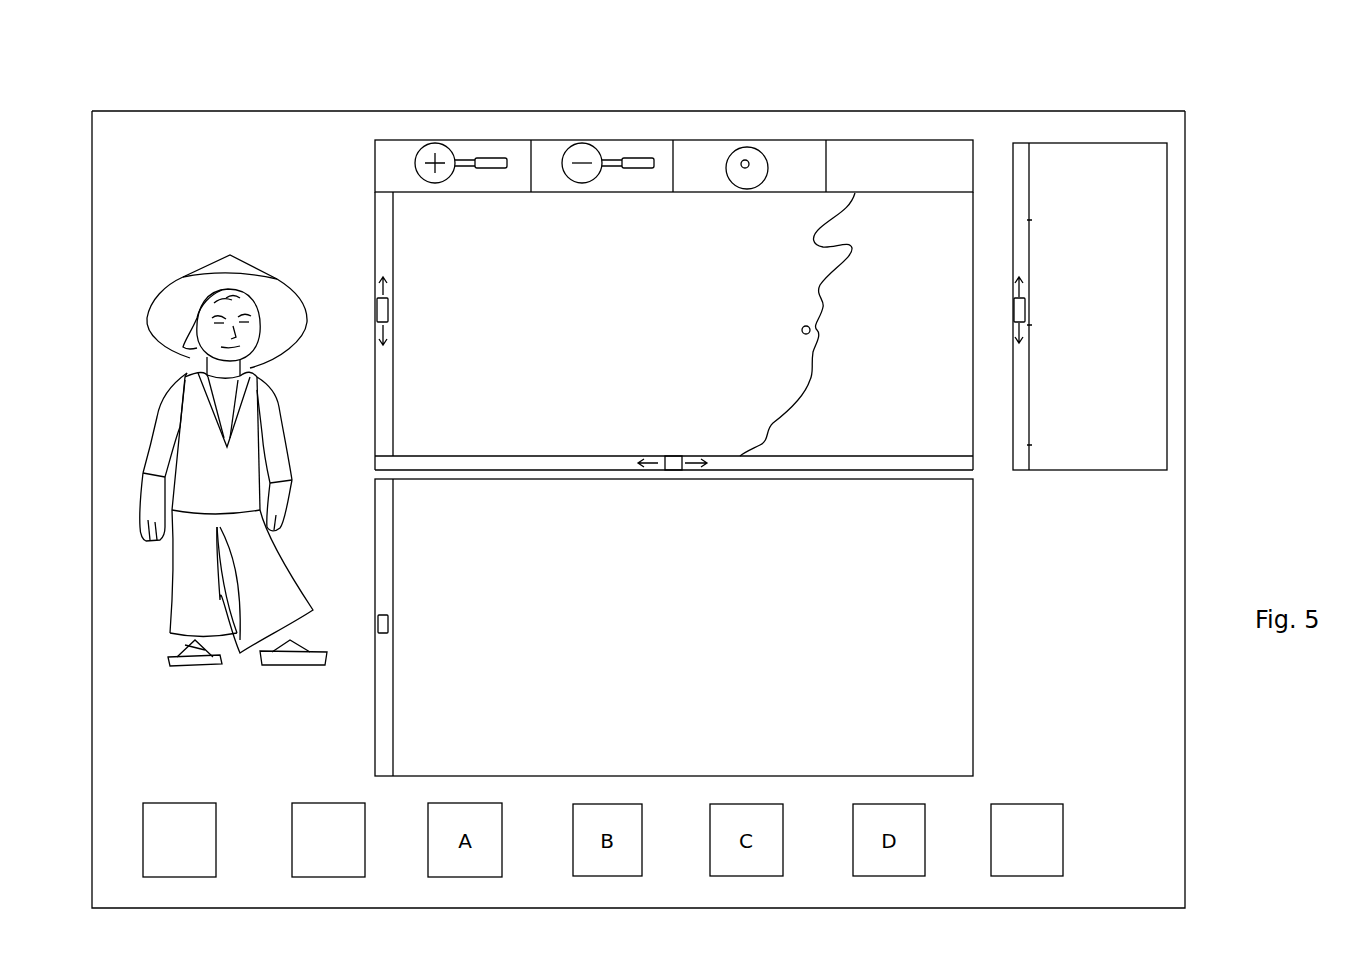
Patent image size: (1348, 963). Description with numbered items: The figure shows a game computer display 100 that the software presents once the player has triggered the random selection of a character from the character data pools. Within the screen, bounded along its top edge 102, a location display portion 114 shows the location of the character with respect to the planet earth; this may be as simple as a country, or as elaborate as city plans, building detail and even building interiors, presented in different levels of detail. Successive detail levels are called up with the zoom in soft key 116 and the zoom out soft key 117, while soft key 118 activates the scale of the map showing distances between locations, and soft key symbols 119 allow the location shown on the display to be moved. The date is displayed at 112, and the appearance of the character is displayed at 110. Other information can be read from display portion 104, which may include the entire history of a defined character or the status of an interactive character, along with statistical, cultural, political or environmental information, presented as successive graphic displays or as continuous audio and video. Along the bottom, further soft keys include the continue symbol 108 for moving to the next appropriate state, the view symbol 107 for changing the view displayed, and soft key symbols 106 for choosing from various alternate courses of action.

The display 100 is at (118, 695).
The screen top edge 102 is at (197, 138).
The display portion 104 is at (950, 593).
The soft key symbols 106 is at (1027, 815).
The view symbol 107 is at (337, 813).
The continue symbol 108 is at (193, 812).
The character appearance display 110 is at (114, 305).
The date display 112 is at (1094, 147).
The location display portion 114 is at (923, 220).
The zoom in soft key 116 is at (491, 150).
The zoom out soft key 117 is at (625, 147).
The scale soft key 118 is at (770, 158).
The soft key symbols 119 is at (390, 305).